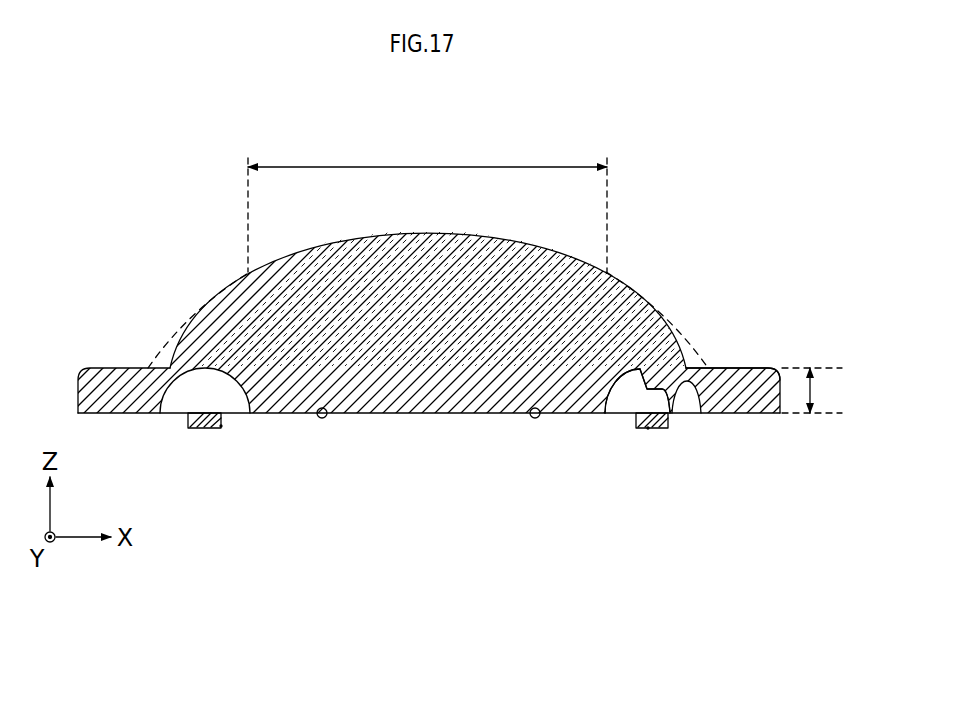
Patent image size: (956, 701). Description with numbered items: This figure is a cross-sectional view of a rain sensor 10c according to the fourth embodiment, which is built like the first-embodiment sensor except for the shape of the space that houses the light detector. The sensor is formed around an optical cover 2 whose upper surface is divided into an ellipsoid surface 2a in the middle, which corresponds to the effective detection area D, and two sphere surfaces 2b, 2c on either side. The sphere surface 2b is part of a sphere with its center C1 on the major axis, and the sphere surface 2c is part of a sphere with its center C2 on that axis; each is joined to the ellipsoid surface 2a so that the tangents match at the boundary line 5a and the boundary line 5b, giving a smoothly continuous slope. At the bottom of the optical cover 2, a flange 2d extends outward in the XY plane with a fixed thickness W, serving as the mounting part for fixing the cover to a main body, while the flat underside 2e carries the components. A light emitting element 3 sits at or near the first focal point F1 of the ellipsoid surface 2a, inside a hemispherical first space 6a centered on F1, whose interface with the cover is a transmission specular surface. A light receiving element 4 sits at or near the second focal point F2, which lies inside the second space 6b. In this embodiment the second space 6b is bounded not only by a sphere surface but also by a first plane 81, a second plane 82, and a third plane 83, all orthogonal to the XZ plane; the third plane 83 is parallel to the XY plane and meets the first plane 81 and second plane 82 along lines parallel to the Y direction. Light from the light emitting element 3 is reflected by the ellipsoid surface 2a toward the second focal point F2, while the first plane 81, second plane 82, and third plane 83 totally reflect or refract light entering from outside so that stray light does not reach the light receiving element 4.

The rain sensor 10c is at (177, 194).
The optical cover 2 is at (537, 243).
The ellipsoid surface 2a is at (323, 243).
The sphere surface 2b is at (195, 312).
The sphere surface 2c is at (665, 310).
The flange 2d is at (740, 372).
The bottom surface 2e is at (430, 413).
The light emitting element 3 is at (197, 430).
The light receiving element 4 is at (655, 431).
The boundary line 5a is at (246, 266).
The boundary line 5b is at (609, 266).
The first space 6a is at (177, 400).
The second space 6b is at (612, 397).
The first plane 81 is at (700, 410).
The second plane 82 is at (619, 403).
The third plane 83 is at (681, 400).
The first focal point F1 is at (221, 420).
The second focal point F2 is at (646, 430).
The center C1 is at (322, 419).
The center C2 is at (535, 419).
The effective detection area D is at (427, 206).
The thickness W is at (812, 390).